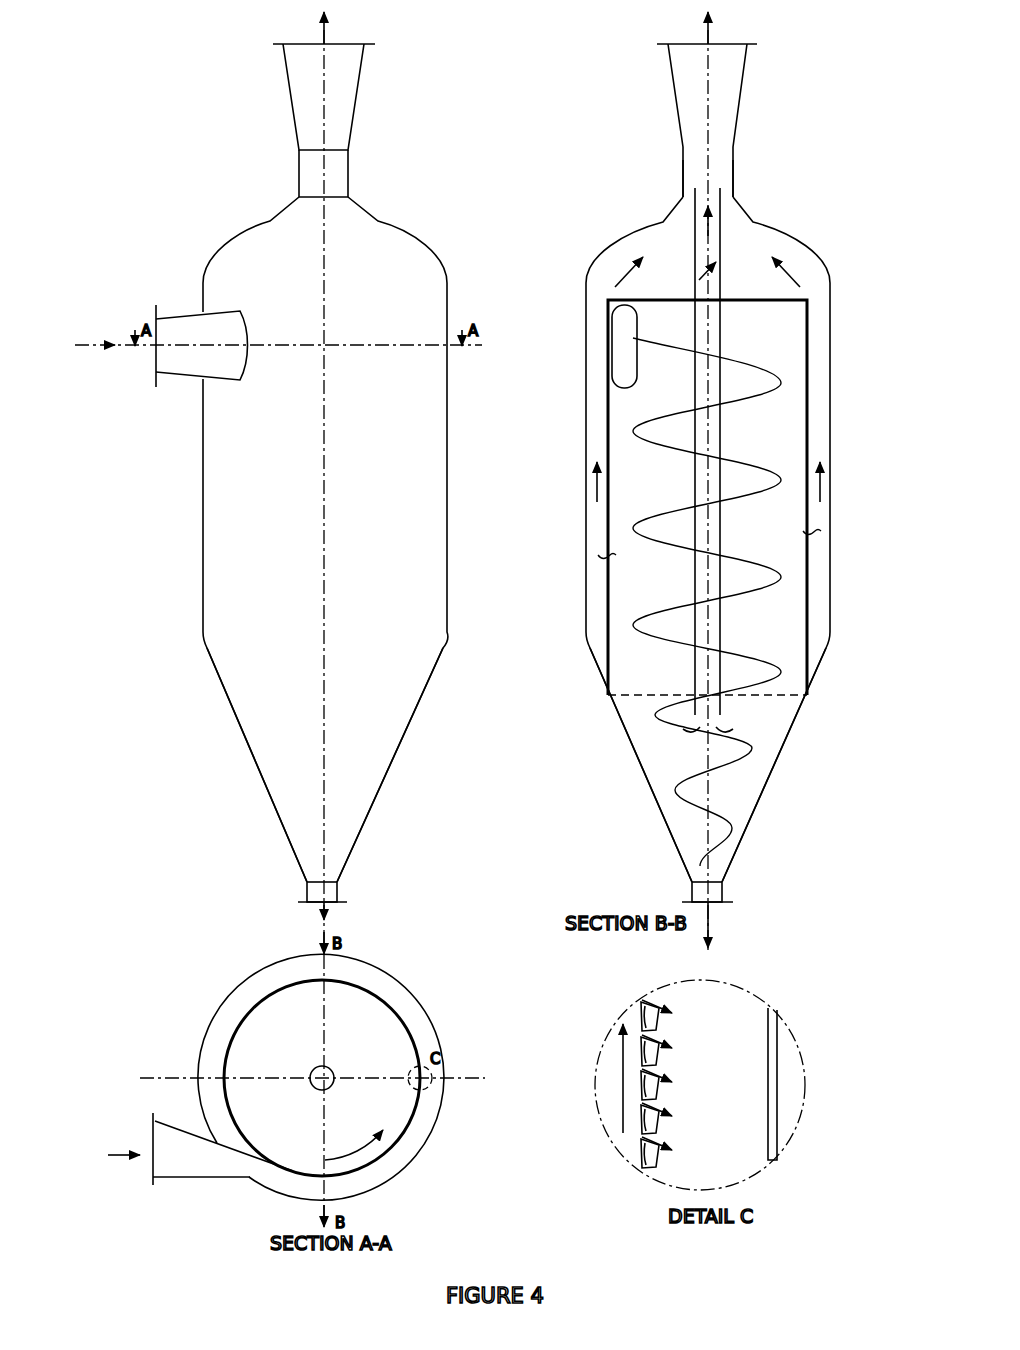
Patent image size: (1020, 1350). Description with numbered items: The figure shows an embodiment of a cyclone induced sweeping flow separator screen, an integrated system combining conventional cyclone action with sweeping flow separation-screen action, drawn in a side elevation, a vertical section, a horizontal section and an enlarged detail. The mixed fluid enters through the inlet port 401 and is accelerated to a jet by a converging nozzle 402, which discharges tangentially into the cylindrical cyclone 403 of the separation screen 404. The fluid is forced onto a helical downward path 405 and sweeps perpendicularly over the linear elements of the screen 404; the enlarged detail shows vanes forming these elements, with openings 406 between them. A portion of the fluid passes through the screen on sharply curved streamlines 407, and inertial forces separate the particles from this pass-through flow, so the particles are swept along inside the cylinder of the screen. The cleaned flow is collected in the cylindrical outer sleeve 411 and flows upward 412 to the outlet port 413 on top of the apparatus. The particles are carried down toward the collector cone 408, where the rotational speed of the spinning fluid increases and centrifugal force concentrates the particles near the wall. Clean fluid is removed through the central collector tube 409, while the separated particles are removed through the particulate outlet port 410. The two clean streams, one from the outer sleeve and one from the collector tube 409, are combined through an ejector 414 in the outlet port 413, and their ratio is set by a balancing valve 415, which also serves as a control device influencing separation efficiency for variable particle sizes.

The inlet port 401 is at (155, 360).
The converging nozzle 402 is at (238, 1165).
The cylindrical cyclone 403 is at (302, 1098).
The separation screen 404 is at (407, 1037).
The helical downward path 405 is at (692, 450).
The vane opening 406 is at (608, 582).
The sharply curved streamlines 407 is at (815, 531).
The collector cone 408 is at (253, 760).
The central collector tube 409 is at (694, 660).
The particulate outlet port 410 is at (318, 905).
The cylindrical outer sleeve 411 is at (226, 1027).
The upward flow 412 is at (596, 480).
The outlet port 413 is at (303, 44).
The ejector 414 is at (682, 182).
The balancing valve 415 is at (722, 268).